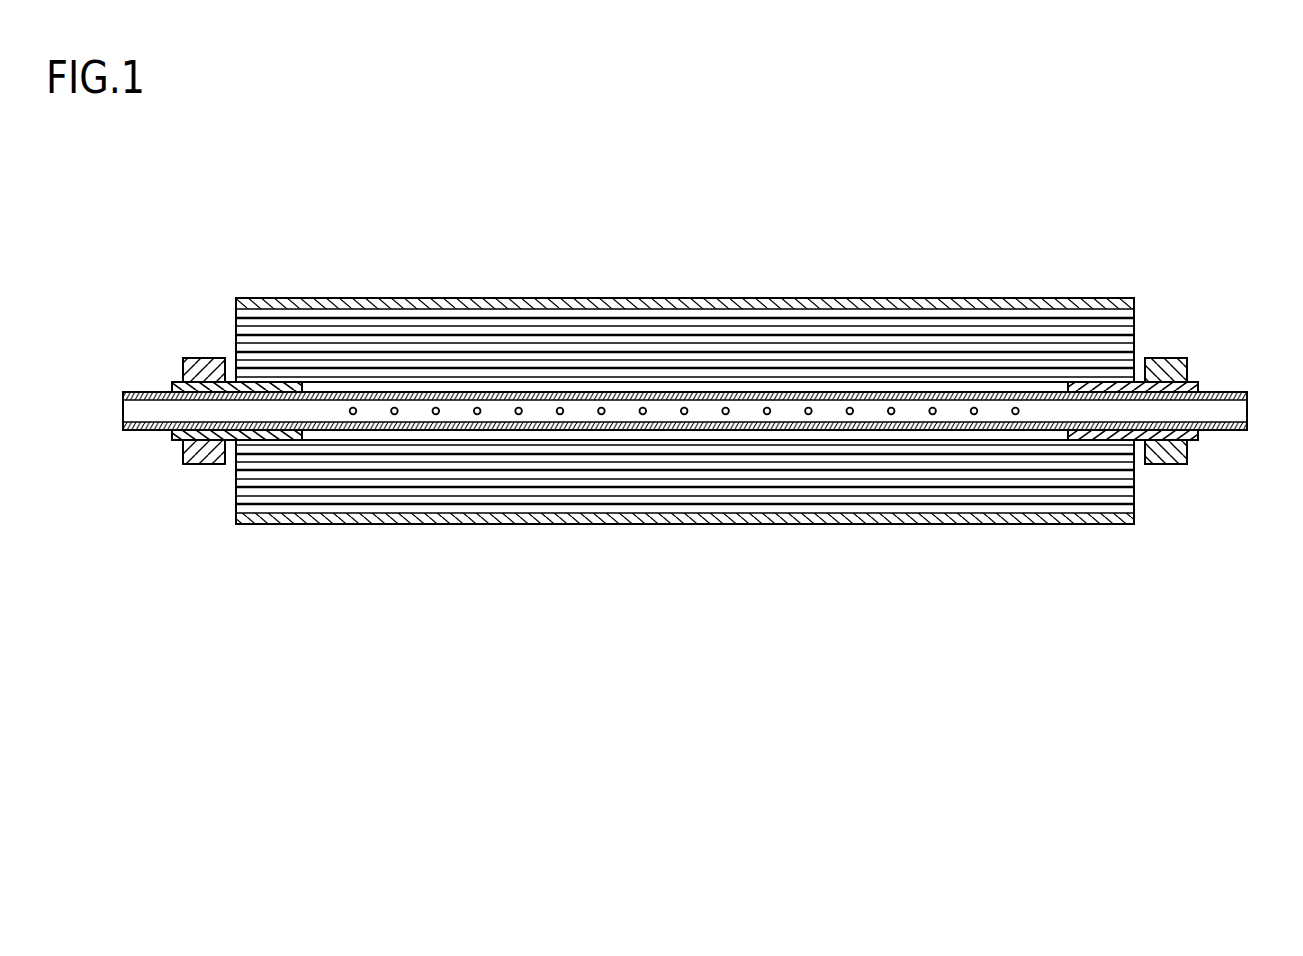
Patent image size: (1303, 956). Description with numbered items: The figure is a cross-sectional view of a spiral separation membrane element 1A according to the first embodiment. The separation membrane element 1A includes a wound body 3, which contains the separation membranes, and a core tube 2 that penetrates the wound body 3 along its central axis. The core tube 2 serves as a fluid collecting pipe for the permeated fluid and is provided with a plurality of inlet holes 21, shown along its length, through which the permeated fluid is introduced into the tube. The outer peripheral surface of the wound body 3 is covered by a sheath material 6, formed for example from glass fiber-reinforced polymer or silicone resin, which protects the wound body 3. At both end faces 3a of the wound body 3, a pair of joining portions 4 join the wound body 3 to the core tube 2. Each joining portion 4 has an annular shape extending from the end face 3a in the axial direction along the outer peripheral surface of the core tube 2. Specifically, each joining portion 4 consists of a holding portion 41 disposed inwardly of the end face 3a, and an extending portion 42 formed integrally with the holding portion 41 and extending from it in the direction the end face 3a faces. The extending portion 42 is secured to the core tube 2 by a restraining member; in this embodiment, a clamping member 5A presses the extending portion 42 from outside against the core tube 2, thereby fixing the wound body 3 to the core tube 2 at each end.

The spiral separation membrane element 1A is at (1045, 212).
The core tube 2 is at (1217, 407).
The inlet holes 21 is at (519, 416).
The wound body 3 is at (677, 343).
The end faces 3a is at (236, 336).
The joining portions 4 is at (690, 516).
The holding portion 41 is at (262, 436).
The extending portion 42 is at (207, 434).
The clamping member 5A is at (207, 372).
The sheath material 6 is at (720, 519).